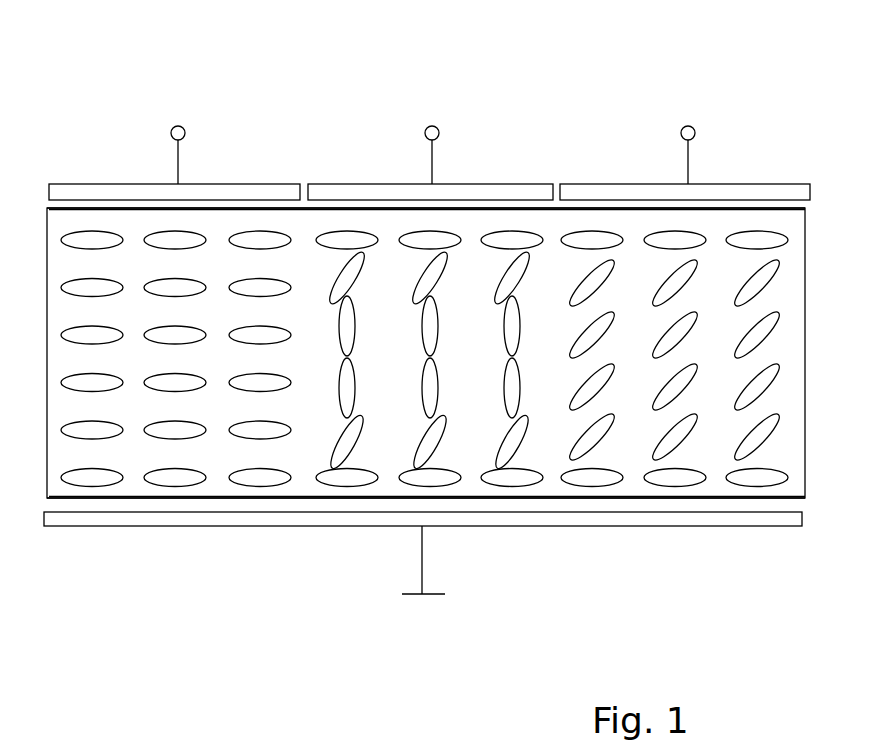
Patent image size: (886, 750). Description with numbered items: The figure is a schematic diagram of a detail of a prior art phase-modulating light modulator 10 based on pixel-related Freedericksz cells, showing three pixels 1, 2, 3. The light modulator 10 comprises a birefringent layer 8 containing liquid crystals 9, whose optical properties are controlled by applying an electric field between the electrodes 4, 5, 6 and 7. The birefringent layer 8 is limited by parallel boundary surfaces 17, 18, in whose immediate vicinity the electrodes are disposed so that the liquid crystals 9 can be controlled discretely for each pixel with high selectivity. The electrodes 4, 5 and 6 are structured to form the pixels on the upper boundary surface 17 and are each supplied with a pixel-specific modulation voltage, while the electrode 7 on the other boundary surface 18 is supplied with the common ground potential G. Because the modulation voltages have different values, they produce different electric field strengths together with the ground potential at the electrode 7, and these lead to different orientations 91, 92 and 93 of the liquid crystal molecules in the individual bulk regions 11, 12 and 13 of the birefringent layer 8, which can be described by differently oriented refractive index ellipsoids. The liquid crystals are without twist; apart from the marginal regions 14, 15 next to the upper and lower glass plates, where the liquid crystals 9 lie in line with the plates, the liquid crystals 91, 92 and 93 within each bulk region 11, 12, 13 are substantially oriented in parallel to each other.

The pixel 1 is at (134, 184).
The pixel 2 is at (409, 184).
The pixel 3 is at (652, 184).
The electrode 4 is at (115, 184).
The electrode 5 is at (390, 184).
The electrode 6 is at (612, 184).
The electrode 7 is at (805, 526).
The birefringent layer 8 is at (783, 345).
The liquid crystals 9 is at (790, 238).
The phase-modulating light modulator 10 is at (596, 84).
The bulk region 11 is at (219, 373).
The bulk region 12 is at (401, 362).
The bulk region 13 is at (641, 354).
The marginal region 14 is at (49, 240).
The marginal region 15 is at (50, 488).
The boundary surface 17 is at (70, 207).
The boundary surface 18 is at (62, 500).
The orientation of liquid crystal molecules 91 is at (177, 385).
The orientation of liquid crystal molecules 92 is at (432, 386).
The orientation of liquid crystal molecules 93 is at (770, 425).